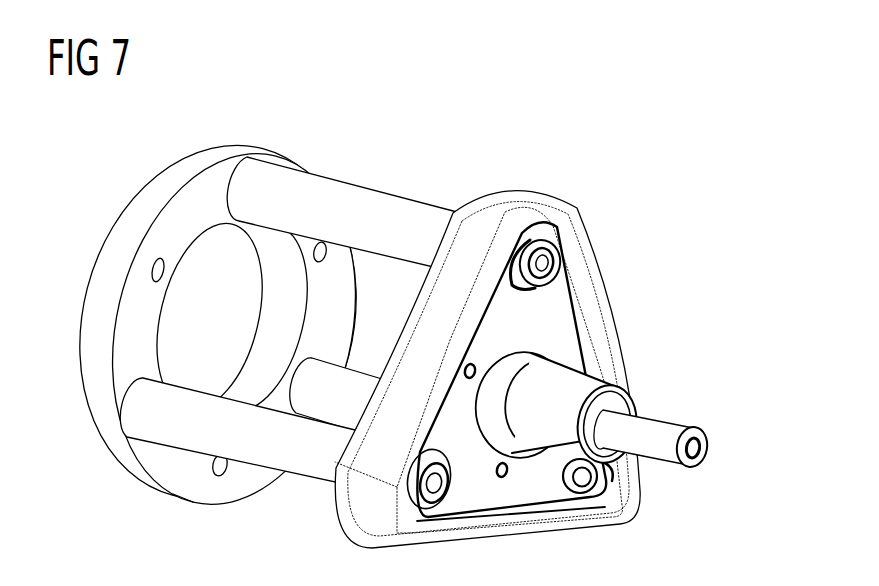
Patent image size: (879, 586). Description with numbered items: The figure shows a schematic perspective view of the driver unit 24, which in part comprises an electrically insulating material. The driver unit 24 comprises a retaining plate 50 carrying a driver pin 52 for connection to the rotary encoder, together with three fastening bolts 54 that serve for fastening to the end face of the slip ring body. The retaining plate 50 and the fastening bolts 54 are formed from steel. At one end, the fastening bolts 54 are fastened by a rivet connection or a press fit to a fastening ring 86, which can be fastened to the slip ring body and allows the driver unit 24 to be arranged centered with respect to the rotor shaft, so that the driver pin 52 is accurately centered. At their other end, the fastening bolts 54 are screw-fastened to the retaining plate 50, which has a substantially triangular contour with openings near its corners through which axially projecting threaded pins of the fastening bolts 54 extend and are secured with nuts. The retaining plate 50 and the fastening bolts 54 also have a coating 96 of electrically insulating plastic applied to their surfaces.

The driver unit 24 is at (630, 238).
The retaining plate 50 is at (557, 323).
The driver pin 52 is at (667, 435).
The fastening bolts 54 is at (363, 203).
The fastening ring 86 is at (170, 228).
The coating 96 is at (281, 185).